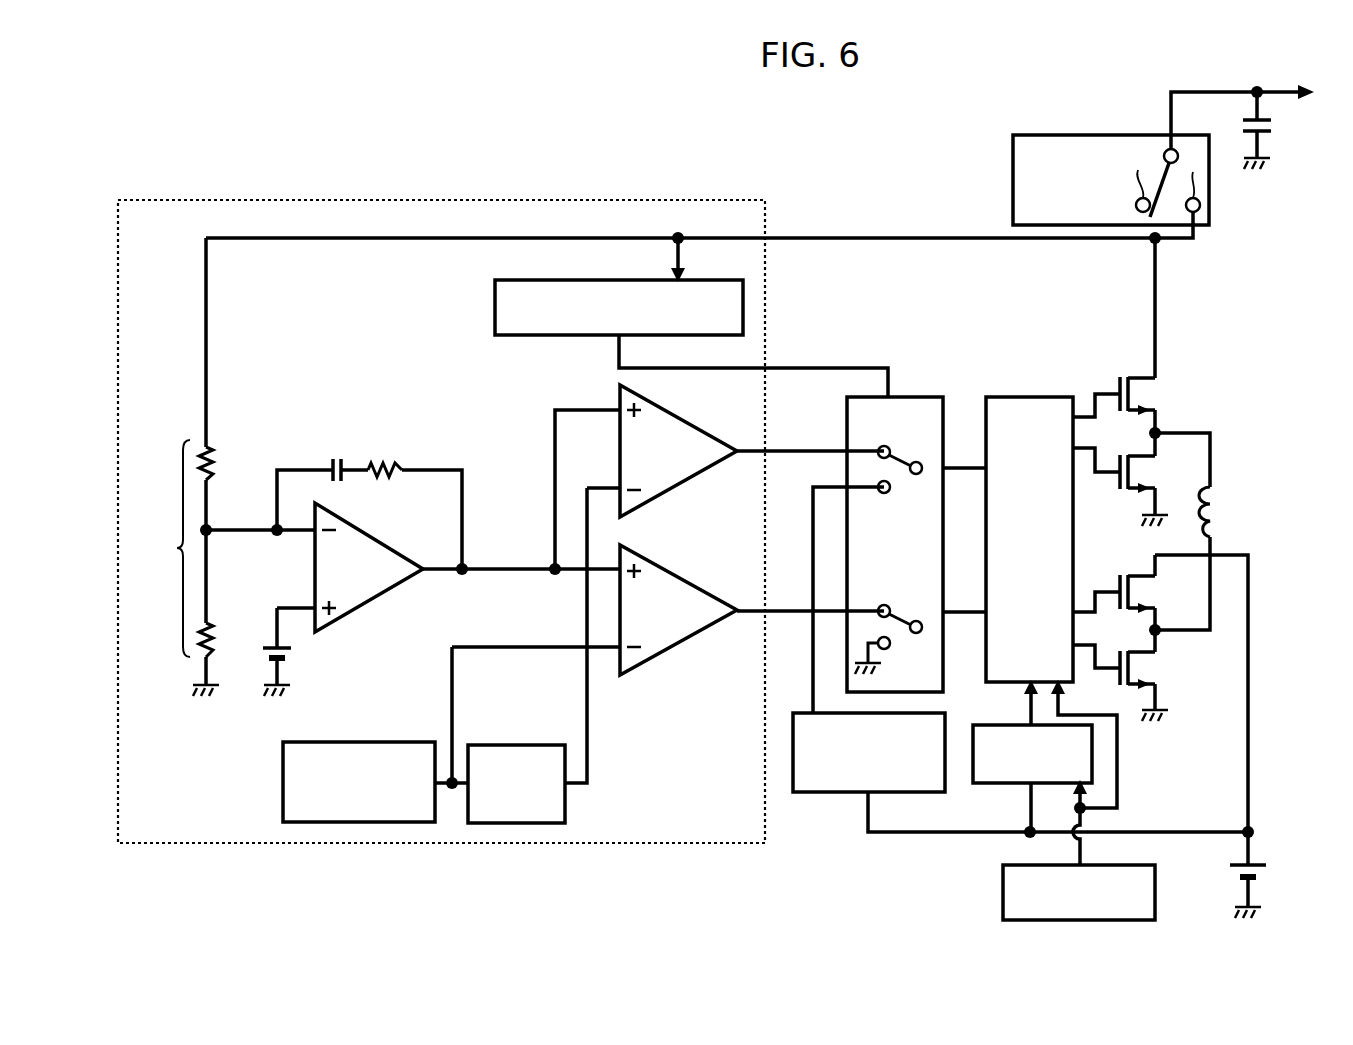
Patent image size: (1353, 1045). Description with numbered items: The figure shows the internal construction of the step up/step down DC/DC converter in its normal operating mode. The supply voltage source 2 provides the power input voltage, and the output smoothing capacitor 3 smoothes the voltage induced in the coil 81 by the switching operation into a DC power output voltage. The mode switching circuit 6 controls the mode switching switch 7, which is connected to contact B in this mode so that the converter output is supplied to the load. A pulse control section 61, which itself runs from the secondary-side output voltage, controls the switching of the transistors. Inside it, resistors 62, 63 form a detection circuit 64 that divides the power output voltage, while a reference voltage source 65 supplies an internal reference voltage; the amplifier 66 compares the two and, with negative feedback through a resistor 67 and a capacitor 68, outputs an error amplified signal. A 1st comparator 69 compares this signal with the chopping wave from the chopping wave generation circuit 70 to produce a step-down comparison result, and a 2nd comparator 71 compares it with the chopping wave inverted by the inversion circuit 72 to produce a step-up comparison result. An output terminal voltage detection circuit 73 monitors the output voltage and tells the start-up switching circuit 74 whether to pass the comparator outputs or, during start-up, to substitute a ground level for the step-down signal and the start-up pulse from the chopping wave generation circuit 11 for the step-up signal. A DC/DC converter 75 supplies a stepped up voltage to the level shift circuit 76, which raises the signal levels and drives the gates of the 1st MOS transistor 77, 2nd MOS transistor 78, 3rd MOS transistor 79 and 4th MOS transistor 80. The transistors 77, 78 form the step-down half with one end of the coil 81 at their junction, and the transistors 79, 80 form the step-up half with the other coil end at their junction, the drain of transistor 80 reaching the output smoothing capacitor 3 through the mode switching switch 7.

The supply voltage source 2 is at (1226, 874).
The output smoothing capacitor 3 is at (1273, 122).
The mode switching circuit 6 is at (1003, 905).
The mode switching switch 7 is at (1013, 178).
The chopping wave generation circuit 11 is at (810, 792).
The pulse control section 61 is at (413, 200).
The resistor 62 is at (218, 460).
The resistor 63 is at (218, 630).
The detection circuit 64 is at (164, 548).
The reference voltage source 65 is at (292, 650).
The amplifier 66 is at (372, 590).
The resistor 67 is at (390, 457).
The capacitor 68 is at (337, 457).
The 1st comparator 69 is at (671, 640).
The chopping wave generation circuit 70 is at (400, 742).
The 2nd comparator 71 is at (673, 480).
The inversion circuit 72 is at (558, 803).
The output terminal voltage detection circuit 73 is at (495, 312).
The start-up switching circuit 74 is at (917, 407).
The DC/DC converter 75 is at (975, 775).
The level shift circuit 76 is at (1030, 407).
The 1st MOS transistor 77 is at (1150, 668).
The 2nd MOS transistor 78 is at (1150, 593).
The 3rd MOS transistor 79 is at (1150, 475).
The 4th MOS transistor 80 is at (1150, 393).
The coil 81 is at (1222, 510).